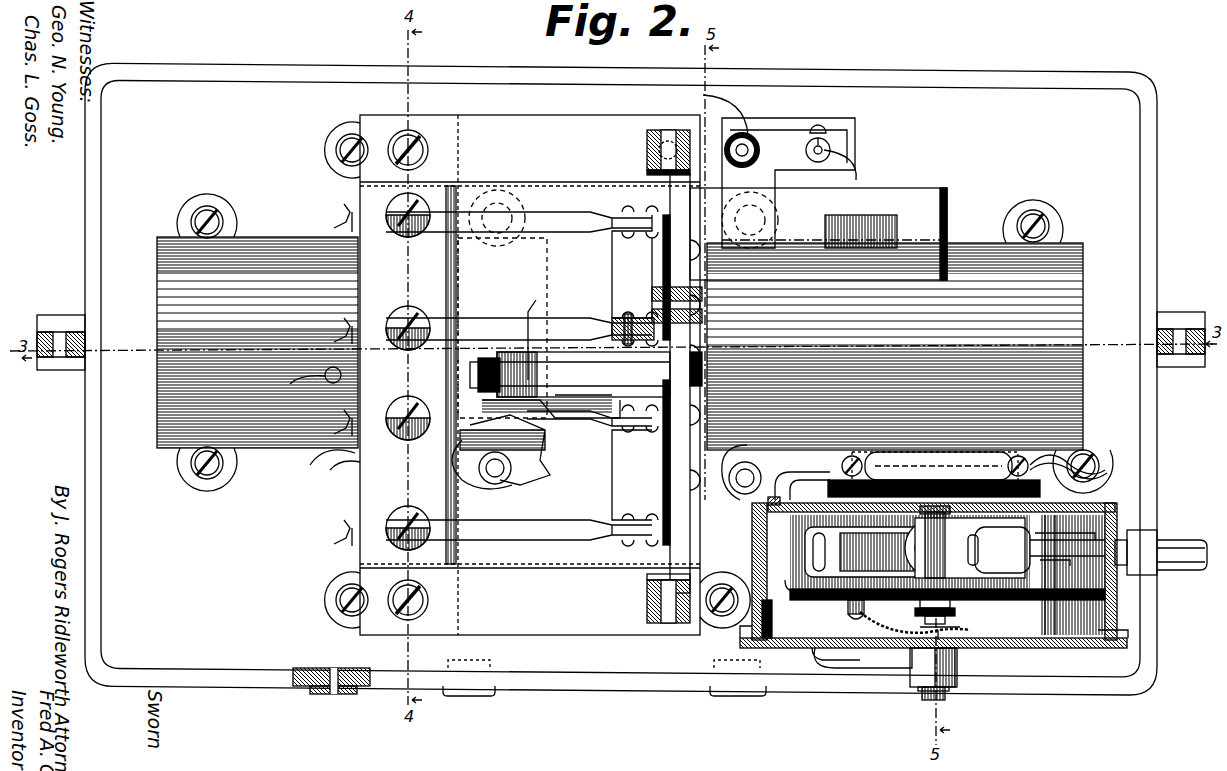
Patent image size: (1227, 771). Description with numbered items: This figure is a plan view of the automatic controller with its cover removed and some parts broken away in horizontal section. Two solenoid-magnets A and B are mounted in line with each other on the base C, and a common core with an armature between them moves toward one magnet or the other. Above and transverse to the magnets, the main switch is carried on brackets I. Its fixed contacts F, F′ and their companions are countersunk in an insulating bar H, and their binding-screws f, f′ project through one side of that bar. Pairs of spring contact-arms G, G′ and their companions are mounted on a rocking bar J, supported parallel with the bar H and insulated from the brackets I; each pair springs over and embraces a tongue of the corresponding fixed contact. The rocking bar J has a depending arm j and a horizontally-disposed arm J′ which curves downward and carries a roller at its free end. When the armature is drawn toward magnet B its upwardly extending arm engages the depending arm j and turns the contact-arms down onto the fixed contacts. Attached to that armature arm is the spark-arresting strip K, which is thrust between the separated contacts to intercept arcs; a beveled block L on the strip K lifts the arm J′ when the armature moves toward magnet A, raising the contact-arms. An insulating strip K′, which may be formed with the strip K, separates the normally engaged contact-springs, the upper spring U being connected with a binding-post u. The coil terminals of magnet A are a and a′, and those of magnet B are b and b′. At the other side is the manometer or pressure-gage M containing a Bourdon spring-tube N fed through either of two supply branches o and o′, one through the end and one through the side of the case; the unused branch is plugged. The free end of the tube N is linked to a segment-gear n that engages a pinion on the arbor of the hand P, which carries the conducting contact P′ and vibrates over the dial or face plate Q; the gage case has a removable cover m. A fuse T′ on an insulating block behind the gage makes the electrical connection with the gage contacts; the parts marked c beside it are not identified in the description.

The solenoid-magnet A is at (257, 342).
The solenoid-magnet B is at (910, 346).
The base C is at (621, 379).
The brackets or standards I is at (336, 150).
The insulating bar H is at (412, 375).
The spark-arresting strip or plate K is at (502, 304).
The insulating-strip K′ is at (818, 234).
The block L is at (524, 336).
The contact-spring U is at (831, 183).
The binding-post u is at (832, 146).
The fixed contact F is at (404, 524).
The fixed contact F′ is at (406, 414).
The binding-screw f is at (334, 538).
The binding-screw f′ is at (356, 405).
The spring contact-arms G is at (567, 519).
The spring contact-arms G′ is at (577, 434).
The rocking bar J is at (698, 325).
The horizontally-disposed arm J′ is at (570, 385).
The depending arm j is at (704, 376).
The terminal of magnet A coil a is at (335, 457).
The terminal of magnet A coil a′ is at (462, 452).
The terminal of magnet B coil b is at (935, 468).
The terminal of magnet B coil b′ is at (729, 472).
The screw c is at (974, 467).
The fuse T′ is at (938, 467).
The manometer or pressure-gage M is at (748, 546).
The Bourdon spring-tube N is at (947, 575).
The segment-gear n is at (966, 540).
The hand or index P is at (955, 616).
The contact P′ is at (962, 628).
The dial or face plate Q is at (1034, 600).
The removable cover m is at (1030, 646).
The branch of fluid-pressure-supply connection o is at (1161, 552).
The branch of fluid-pressure-supply connection o′ is at (933, 674).